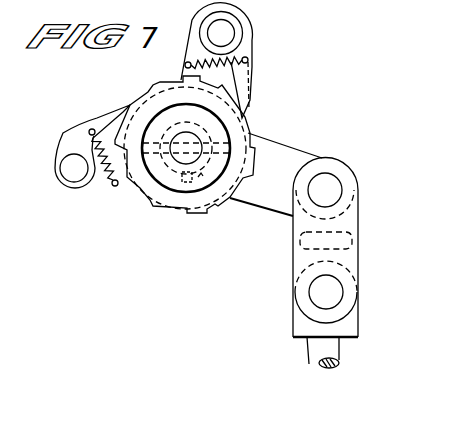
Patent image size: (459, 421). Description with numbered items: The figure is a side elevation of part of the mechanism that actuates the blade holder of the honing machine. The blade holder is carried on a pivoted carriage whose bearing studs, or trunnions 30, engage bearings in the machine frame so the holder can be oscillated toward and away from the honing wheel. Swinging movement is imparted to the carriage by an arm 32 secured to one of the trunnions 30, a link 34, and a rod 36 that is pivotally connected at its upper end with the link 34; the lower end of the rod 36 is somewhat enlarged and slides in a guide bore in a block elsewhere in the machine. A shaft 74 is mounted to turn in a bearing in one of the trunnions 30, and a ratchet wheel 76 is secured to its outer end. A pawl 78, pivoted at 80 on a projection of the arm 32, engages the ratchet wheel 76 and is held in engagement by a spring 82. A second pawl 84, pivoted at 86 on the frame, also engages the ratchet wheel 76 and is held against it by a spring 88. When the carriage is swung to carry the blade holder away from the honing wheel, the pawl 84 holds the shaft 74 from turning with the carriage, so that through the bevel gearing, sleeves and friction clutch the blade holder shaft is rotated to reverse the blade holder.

The trunnion 30 is at (207, 212).
The arm 32 is at (282, 154).
The link 34 is at (357, 220).
The rod 36 is at (338, 350).
The shaft 74 is at (178, 162).
The ratchet wheel 76 is at (238, 129).
The pawl 78 is at (251, 78).
The pivot 80 is at (229, 32).
The spring 82 is at (183, 62).
The pawl 84 is at (102, 122).
The pivot 86 is at (66, 179).
The spring 88 is at (107, 178).